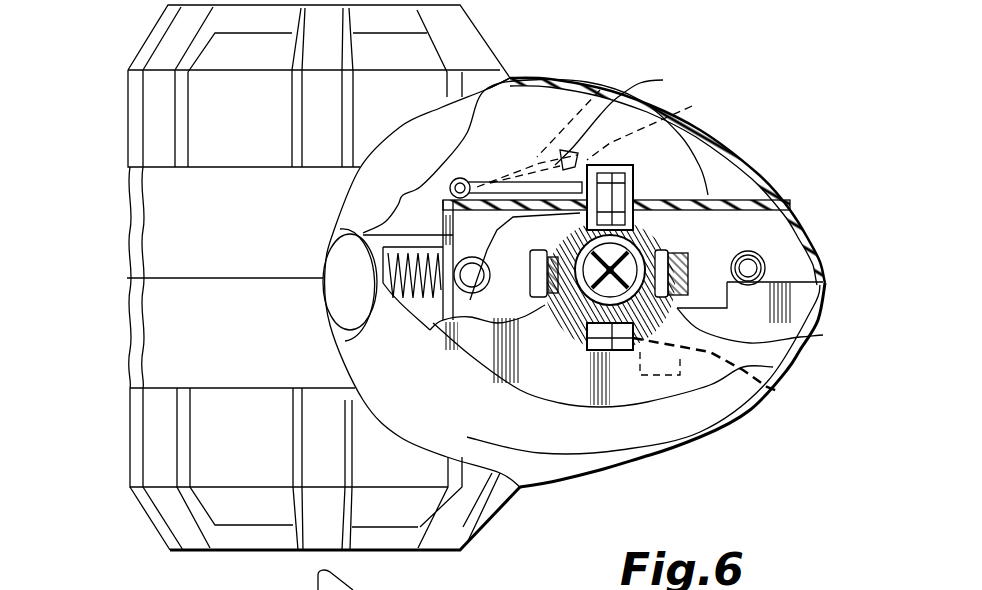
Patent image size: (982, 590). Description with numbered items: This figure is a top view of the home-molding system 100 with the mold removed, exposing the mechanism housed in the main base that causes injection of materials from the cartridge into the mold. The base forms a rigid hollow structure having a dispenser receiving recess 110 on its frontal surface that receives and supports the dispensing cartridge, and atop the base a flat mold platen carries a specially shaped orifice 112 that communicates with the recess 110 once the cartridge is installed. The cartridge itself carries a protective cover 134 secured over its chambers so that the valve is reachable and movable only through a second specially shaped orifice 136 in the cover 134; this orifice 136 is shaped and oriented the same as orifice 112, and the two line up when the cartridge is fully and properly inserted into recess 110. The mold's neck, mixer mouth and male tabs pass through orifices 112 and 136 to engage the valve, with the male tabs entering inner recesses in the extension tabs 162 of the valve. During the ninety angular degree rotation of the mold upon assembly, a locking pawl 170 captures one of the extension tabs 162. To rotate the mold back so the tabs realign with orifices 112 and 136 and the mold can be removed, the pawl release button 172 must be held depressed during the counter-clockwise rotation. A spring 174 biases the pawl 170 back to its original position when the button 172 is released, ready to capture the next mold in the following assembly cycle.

The home-molding system 100 is at (715, 446).
The dispenser receiving recess 110 is at (776, 237).
The specially shaped orifice 112 is at (800, 339).
The protective cover 134 is at (718, 228).
The specially shaped orifice 136 is at (543, 313).
The extension tabs 162 is at (702, 103).
The locking pawl 170 is at (605, 82).
The pawl release button 172 is at (323, 262).
The spring 174 is at (511, 78).